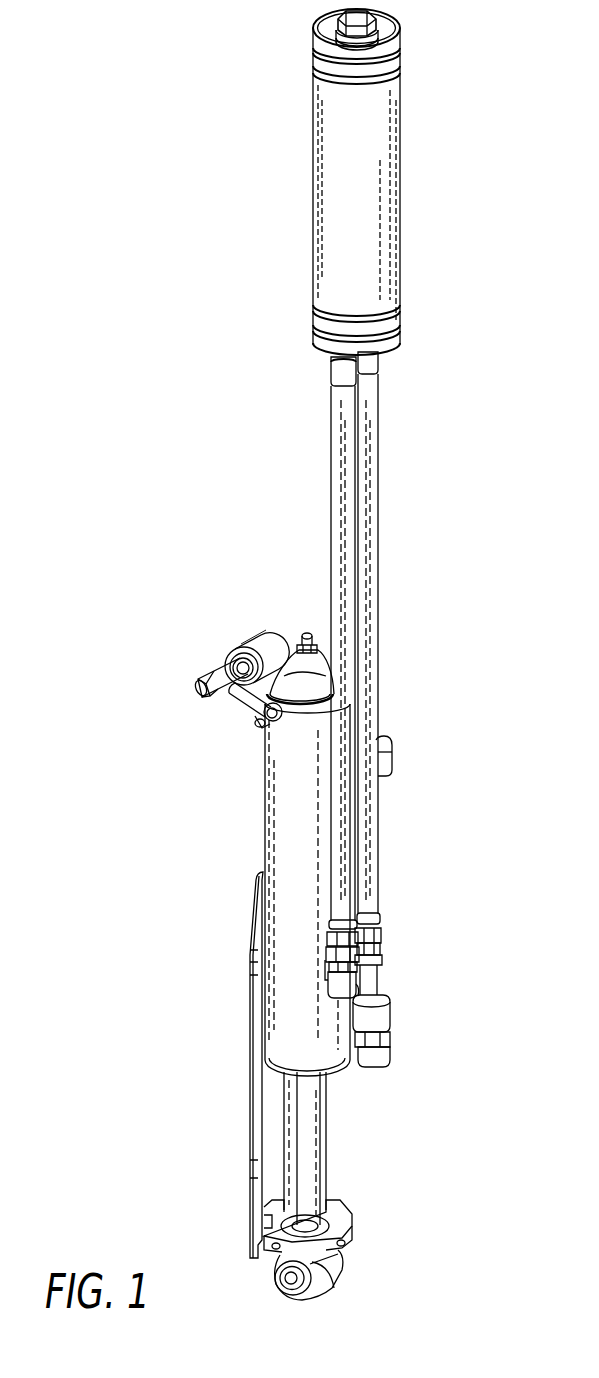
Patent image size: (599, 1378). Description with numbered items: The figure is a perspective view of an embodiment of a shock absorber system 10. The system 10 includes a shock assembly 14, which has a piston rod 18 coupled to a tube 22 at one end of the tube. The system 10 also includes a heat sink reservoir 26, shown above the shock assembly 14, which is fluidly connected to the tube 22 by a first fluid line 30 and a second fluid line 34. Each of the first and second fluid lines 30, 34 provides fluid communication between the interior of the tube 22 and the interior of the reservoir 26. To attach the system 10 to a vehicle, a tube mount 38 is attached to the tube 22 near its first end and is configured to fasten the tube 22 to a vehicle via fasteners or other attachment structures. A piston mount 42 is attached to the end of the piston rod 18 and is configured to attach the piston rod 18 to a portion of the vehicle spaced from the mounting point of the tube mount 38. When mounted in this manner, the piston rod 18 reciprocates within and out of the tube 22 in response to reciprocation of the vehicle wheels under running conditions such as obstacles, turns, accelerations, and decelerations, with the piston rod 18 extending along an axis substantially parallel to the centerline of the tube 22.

The shock absorber system 10 is at (150, 62).
The shock assembly 14 is at (202, 946).
The piston rod 18 is at (317, 1145).
The tube 22 is at (300, 818).
The heat sink reservoir 26 is at (383, 200).
The first fluid line 30 is at (332, 452).
The second fluid line 34 is at (378, 468).
The tube mount 38 is at (228, 618).
The piston mount 42 is at (364, 1288).